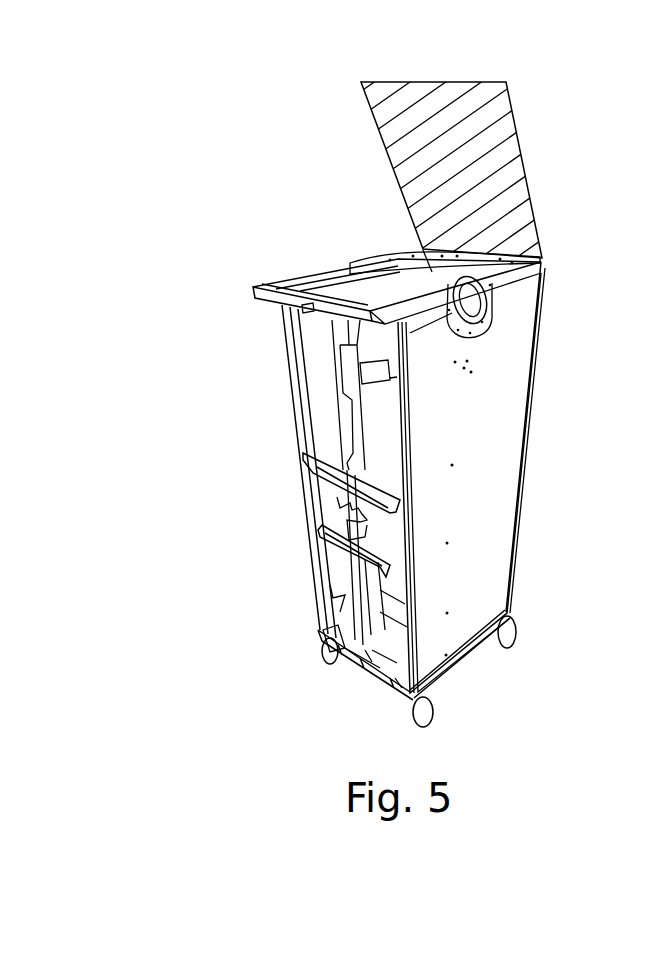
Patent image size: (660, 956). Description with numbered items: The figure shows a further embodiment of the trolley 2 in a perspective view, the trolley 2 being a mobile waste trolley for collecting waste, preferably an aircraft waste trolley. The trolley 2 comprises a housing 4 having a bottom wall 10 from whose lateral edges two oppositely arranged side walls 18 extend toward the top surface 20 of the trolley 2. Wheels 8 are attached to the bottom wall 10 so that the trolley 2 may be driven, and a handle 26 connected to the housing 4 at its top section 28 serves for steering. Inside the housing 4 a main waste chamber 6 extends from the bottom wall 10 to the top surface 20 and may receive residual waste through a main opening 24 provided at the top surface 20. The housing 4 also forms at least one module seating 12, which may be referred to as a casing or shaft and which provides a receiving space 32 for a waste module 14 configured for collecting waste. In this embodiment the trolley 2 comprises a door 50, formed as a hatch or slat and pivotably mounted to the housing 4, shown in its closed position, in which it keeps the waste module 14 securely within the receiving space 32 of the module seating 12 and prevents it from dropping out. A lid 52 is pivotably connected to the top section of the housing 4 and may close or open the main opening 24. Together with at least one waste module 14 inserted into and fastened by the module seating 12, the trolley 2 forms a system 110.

The trolley 2 is at (240, 165).
The system 110 is at (288, 152).
The housing 4 is at (540, 346).
The main waste chamber 6 is at (410, 256).
The wheels 8 is at (510, 656).
The bottom wall 10 is at (460, 676).
The module seating 12 is at (385, 672).
The waste module 14 is at (298, 370).
The side walls 18 is at (507, 410).
The top surface 20 is at (312, 263).
The main opening 24 is at (428, 244).
The handle 26 is at (272, 290).
The top section 28 is at (548, 283).
The receiving space 32 is at (355, 660).
The door 50 is at (385, 527).
The lid 52 is at (530, 165).